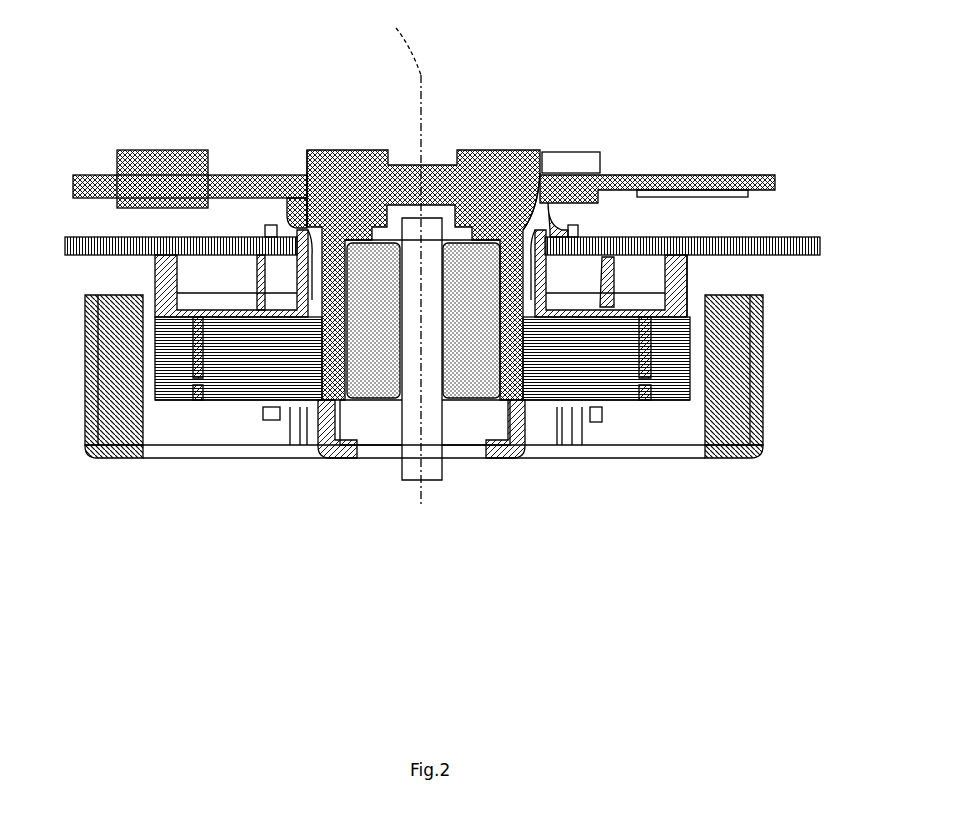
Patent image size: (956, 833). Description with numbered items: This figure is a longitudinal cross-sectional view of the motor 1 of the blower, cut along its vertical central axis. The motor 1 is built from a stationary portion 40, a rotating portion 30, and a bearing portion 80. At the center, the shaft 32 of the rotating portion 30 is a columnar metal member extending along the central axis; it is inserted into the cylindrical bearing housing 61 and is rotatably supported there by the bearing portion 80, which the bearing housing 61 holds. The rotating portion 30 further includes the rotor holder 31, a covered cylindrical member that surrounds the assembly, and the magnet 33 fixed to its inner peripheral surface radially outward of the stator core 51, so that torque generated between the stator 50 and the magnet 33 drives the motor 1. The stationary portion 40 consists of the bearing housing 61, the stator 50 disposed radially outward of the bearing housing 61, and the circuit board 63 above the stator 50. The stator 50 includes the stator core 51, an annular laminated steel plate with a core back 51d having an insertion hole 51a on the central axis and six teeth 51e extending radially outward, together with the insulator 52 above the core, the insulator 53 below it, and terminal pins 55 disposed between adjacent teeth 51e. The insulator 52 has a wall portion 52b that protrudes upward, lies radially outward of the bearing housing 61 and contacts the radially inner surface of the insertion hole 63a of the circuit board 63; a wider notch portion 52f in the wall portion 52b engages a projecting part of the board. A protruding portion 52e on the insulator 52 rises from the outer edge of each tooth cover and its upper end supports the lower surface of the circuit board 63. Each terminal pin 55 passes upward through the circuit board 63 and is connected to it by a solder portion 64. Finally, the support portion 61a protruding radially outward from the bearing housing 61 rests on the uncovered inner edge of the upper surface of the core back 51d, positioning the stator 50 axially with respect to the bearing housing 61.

The motor 1 is at (735, 103).
The rotating portion 30 is at (82, 449).
The rotor holder 31 is at (733, 460).
The shaft 32 is at (408, 466).
The magnet 33 is at (758, 378).
The stationary portion 40 is at (76, 175).
The stator 50 is at (617, 406).
The stator core 51 is at (273, 372).
The insertion hole 51a is at (530, 374).
The core back 51d is at (302, 372).
The teeth 51e is at (233, 362).
The insulator 52 is at (204, 292).
The wall portion 52b is at (300, 225).
The protruding portion 52e is at (692, 278).
The notch portion 52f is at (549, 173).
The insulator 53 is at (320, 455).
The terminal pin 55 is at (273, 224).
The bearing housing 61 is at (352, 152).
The support portion 61a is at (317, 174).
The circuit board 63 is at (795, 236).
The insertion hole 63a is at (293, 222).
The solder portion 64 is at (262, 224).
The bearing portion 80 is at (472, 386).